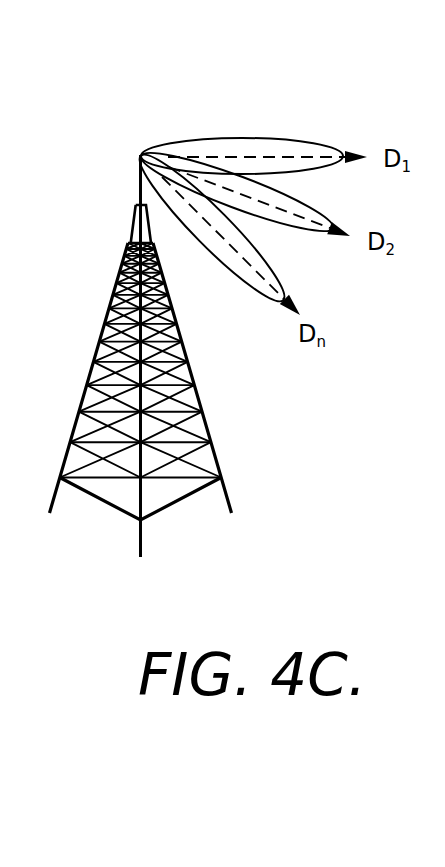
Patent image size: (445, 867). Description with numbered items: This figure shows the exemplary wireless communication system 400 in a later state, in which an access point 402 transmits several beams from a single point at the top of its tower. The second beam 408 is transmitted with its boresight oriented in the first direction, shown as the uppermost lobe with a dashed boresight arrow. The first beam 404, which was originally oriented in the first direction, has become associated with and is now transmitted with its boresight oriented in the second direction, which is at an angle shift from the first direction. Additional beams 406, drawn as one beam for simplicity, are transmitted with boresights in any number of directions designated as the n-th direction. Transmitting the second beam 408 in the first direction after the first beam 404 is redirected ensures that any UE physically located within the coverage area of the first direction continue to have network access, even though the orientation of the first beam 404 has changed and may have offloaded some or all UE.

The wireless communication system 400 is at (102, 118).
The access point 402 is at (137, 184).
The first beam 404 is at (293, 196).
The additional beams 406 is at (259, 250).
The second beam 408 is at (243, 138).